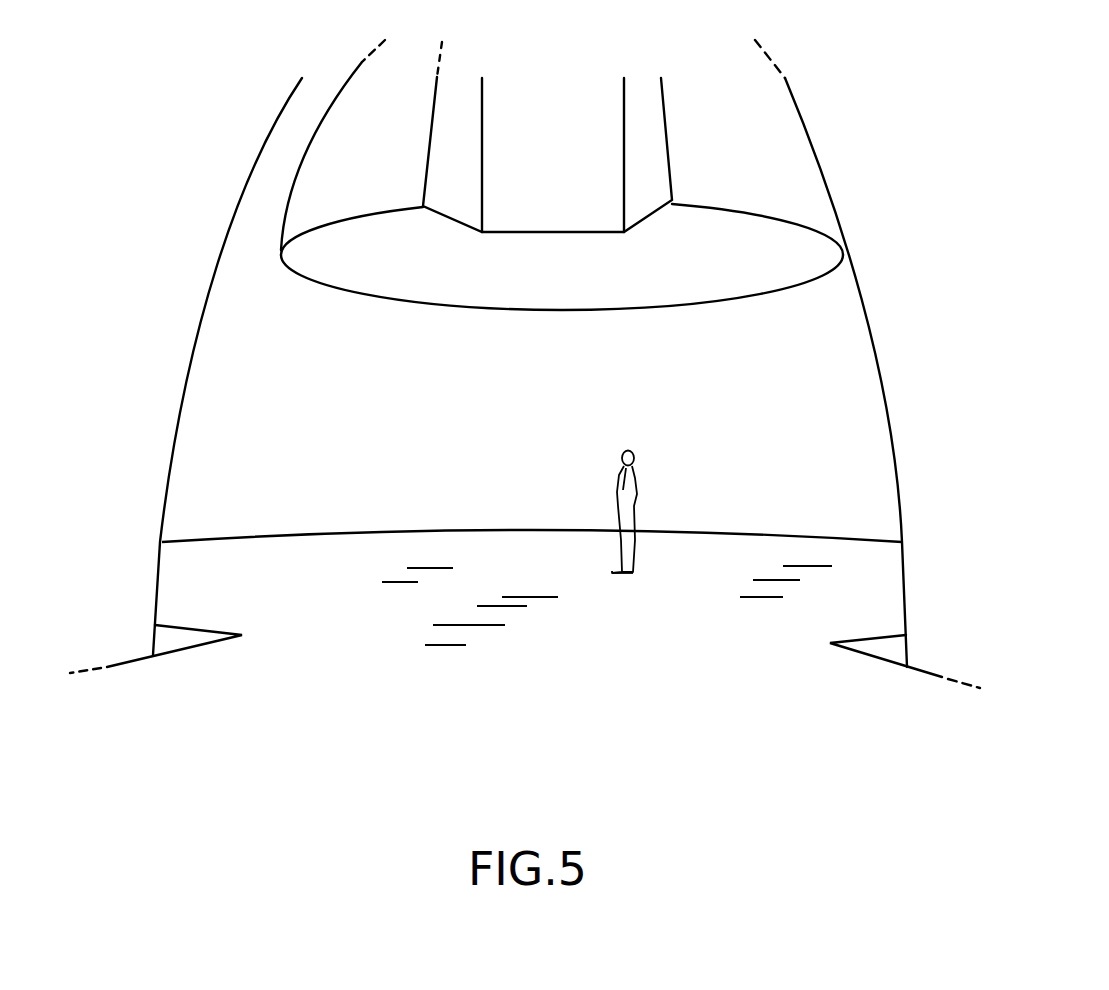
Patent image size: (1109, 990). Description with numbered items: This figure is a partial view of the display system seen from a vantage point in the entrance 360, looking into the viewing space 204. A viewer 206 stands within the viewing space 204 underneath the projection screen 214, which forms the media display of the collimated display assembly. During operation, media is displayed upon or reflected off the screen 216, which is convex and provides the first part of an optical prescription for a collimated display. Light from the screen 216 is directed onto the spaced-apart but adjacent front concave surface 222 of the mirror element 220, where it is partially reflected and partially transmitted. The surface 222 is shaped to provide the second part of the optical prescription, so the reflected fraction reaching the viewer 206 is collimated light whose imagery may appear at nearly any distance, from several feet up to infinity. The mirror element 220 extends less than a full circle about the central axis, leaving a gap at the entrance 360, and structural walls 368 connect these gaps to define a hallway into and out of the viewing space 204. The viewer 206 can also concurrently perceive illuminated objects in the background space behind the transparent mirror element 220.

The viewing space 204 is at (358, 638).
The viewer 206 is at (278, 505).
The projection screen 214 is at (848, 106).
The reflective surface 216 is at (812, 172).
The mirror element 220 is at (893, 673).
The front concave surface 222 is at (875, 357).
The entrance 360 is at (456, 712).
The structural walls 368 is at (932, 642).